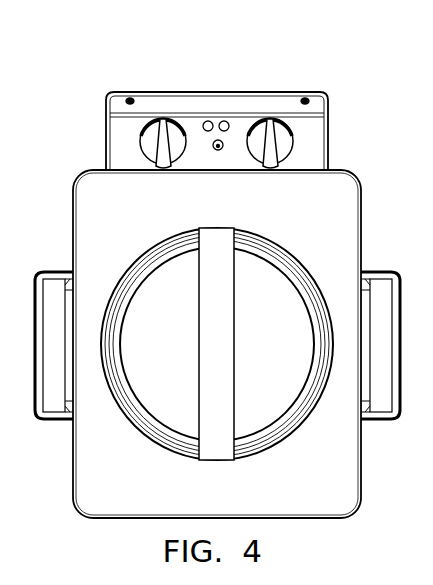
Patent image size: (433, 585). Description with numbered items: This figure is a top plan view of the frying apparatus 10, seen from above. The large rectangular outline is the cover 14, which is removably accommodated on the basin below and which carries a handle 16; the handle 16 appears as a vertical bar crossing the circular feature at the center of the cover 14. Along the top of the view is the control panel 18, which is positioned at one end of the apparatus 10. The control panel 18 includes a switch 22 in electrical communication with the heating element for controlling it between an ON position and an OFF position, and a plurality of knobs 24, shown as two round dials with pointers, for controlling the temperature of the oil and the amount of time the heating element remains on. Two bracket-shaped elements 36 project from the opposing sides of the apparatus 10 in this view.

The frying apparatus 10 is at (71, 87).
The cover 14 is at (343, 202).
The handle 16 is at (225, 282).
The control panel 18 is at (181, 78).
The switch 22 is at (217, 152).
The knobs 24 is at (150, 132).
The handle 36 is at (33, 274).